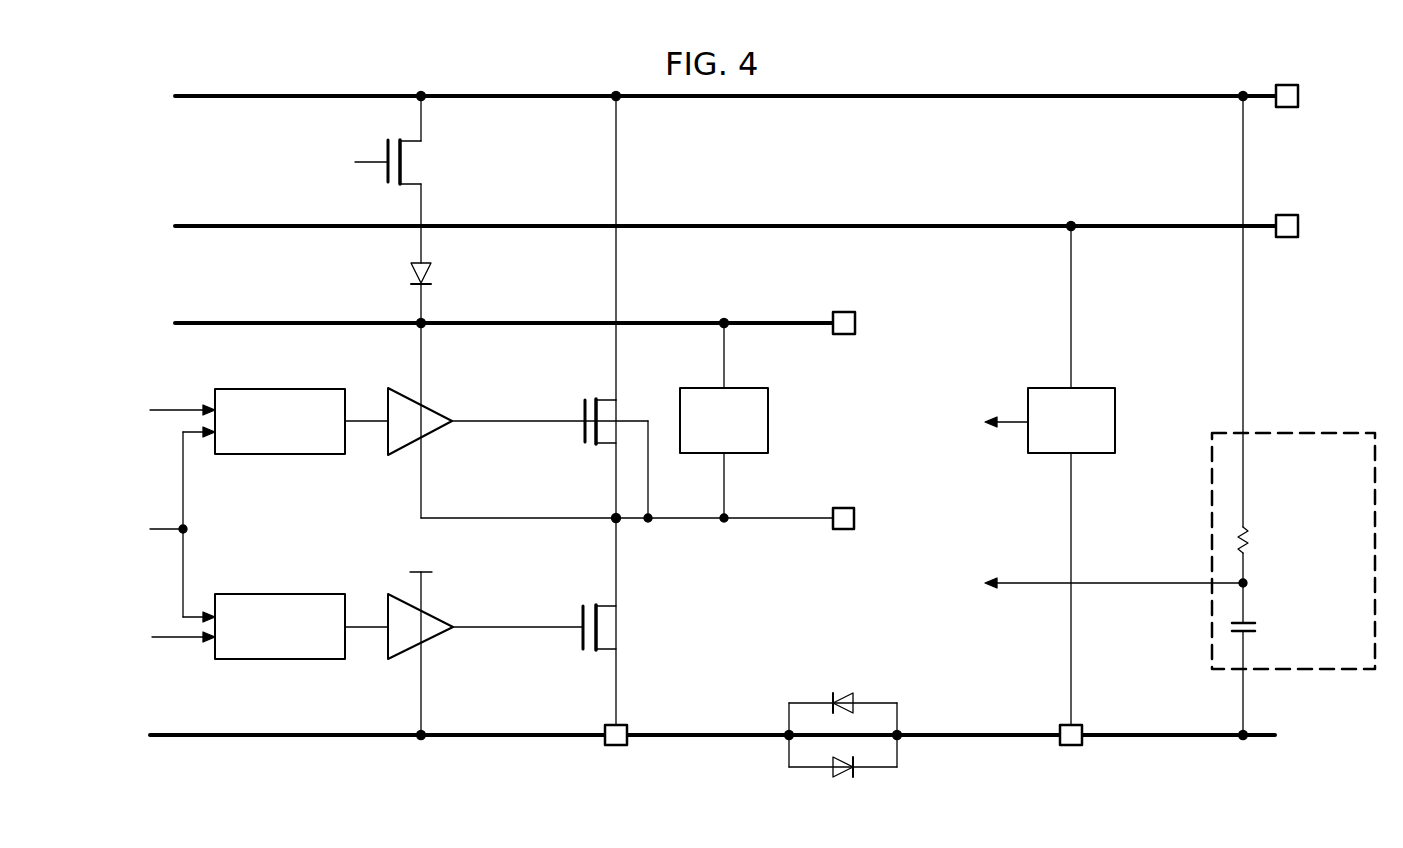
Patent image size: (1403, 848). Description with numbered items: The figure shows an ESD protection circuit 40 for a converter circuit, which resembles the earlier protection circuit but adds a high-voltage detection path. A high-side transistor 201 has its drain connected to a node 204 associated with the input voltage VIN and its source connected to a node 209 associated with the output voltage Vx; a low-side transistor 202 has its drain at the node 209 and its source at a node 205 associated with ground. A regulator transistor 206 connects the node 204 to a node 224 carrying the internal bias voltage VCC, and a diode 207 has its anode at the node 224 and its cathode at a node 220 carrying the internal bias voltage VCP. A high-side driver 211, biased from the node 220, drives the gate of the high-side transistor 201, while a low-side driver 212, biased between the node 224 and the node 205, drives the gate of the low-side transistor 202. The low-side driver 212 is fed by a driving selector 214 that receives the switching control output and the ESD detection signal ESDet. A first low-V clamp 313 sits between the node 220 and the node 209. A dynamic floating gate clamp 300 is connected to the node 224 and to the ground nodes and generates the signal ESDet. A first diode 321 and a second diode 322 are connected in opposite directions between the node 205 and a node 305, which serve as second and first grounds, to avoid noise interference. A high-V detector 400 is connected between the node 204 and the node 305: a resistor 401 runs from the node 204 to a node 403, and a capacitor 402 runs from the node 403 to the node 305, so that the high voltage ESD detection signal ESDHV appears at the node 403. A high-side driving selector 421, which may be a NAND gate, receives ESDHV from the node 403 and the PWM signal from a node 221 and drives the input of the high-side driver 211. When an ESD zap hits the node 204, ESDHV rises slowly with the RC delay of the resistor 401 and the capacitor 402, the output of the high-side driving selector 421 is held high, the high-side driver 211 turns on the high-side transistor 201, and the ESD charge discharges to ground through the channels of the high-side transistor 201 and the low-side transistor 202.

The ESD protection circuit 40 is at (1112, 64).
The node 204 is at (612, 108).
The regulator transistor 206 is at (384, 152).
The diode 207 is at (410, 277).
The node 220 is at (720, 318).
The node 224 is at (1075, 220).
The high-side driving selector 421 is at (280, 387).
The node 221 is at (178, 540).
The driving selector 214 is at (282, 662).
The high-side driver 211 is at (463, 397).
The low-side driver 212 is at (440, 648).
The high-side transistor 201 is at (582, 410).
The node 209 is at (612, 523).
The first low-V clamp 313 is at (770, 423).
The low-side transistor 202 is at (580, 638).
The node 205 is at (600, 743).
The first diode 321 is at (842, 691).
The second diode 322 is at (842, 779).
The dynamic floating gate clamp 300 is at (1118, 411).
The node 305 is at (1086, 745).
The high-V detector 400 is at (1322, 424).
The resistor 401 is at (1252, 545).
The node 403 is at (1250, 588).
The capacitor 402 is at (1258, 629).